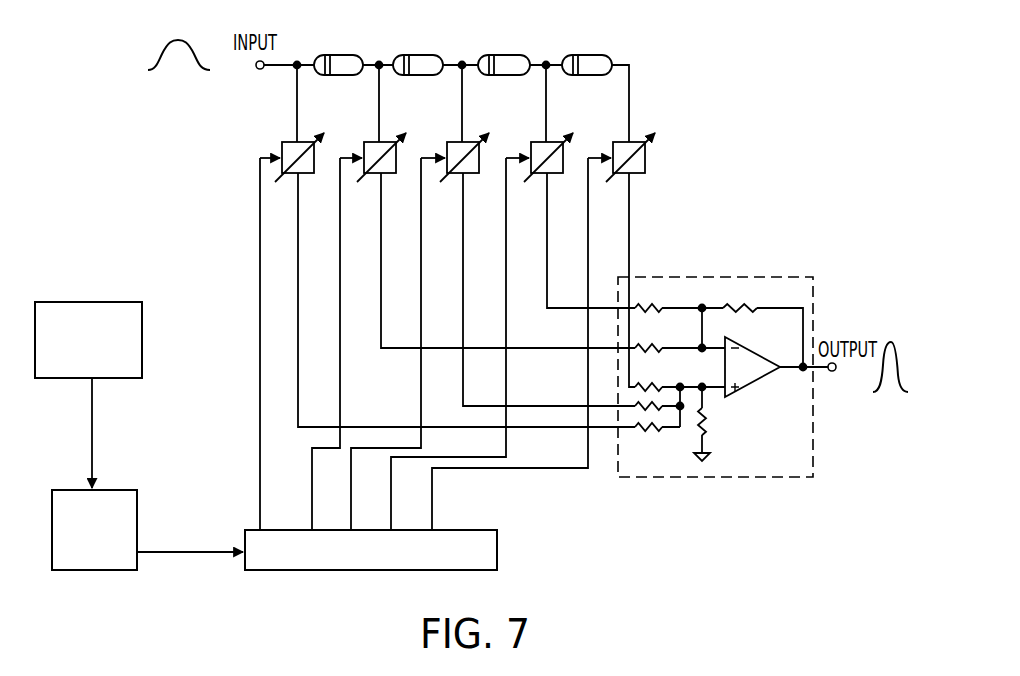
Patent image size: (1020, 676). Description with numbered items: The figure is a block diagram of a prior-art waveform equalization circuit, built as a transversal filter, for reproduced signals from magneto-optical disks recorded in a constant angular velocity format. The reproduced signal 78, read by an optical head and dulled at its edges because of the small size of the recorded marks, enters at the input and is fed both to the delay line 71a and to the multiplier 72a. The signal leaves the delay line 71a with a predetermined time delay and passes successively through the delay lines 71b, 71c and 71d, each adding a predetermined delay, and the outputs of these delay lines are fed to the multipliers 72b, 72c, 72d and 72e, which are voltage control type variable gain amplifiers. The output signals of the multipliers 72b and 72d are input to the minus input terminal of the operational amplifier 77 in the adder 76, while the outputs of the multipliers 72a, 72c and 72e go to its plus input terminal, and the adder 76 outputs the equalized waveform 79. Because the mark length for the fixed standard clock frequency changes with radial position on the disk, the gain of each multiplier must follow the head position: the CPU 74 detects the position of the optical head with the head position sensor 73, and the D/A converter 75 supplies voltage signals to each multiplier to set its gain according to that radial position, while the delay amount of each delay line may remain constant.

The delay line 71a is at (342, 53).
The delay line 71b is at (422, 53).
The delay line 71c is at (503, 53).
The delay line 71d is at (603, 53).
The multiplier 72a is at (282, 143).
The multiplier 72b is at (364, 143).
The multiplier 72c is at (448, 143).
The multiplier 72d is at (532, 143).
The multiplier 72e is at (614, 141).
The head position sensor 73 is at (142, 337).
The CPU 74 is at (137, 519).
The D/A converter 75 is at (497, 553).
The adder 76 is at (723, 403).
The operational amplifier 77 is at (748, 358).
The reproduced signal 78 is at (182, 38).
The output waveform 79 is at (892, 346).